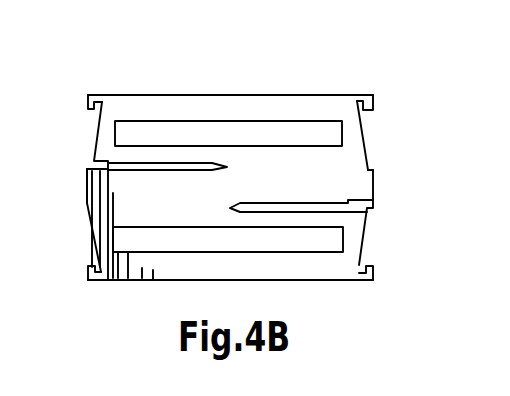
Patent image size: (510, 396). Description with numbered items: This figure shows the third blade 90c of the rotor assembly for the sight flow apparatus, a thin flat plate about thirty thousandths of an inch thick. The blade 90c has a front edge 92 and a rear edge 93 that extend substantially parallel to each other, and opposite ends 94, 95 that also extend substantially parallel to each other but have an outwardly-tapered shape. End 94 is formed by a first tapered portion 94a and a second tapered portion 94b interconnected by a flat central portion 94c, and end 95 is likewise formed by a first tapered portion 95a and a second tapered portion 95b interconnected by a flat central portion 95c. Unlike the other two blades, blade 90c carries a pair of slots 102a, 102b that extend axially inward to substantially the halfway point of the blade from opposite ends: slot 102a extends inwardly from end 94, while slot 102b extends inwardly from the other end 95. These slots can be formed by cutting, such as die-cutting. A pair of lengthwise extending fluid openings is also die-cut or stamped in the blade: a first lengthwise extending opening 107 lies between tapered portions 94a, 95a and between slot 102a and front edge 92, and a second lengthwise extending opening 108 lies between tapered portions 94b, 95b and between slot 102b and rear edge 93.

The third blade 90c is at (278, 82).
The front edge 92 is at (160, 95).
The rear edge 93 is at (201, 281).
The end 94 is at (89, 156).
The first tapered portion 94a is at (98, 129).
The second tapered portion 94b is at (100, 237).
The flat central portion 94c is at (86, 182).
The end 95 is at (364, 130).
The first tapered portion 95a is at (364, 151).
The second tapered portion 95b is at (360, 240).
The flat central portion 95c is at (366, 183).
The slot 102a is at (182, 172).
The slot 102b is at (316, 203).
The first lengthwise extending opening 107 is at (318, 133).
The second lengthwise extending opening 108 is at (320, 247).